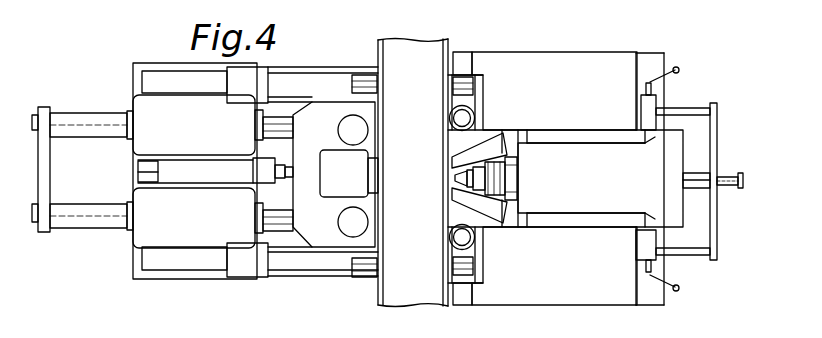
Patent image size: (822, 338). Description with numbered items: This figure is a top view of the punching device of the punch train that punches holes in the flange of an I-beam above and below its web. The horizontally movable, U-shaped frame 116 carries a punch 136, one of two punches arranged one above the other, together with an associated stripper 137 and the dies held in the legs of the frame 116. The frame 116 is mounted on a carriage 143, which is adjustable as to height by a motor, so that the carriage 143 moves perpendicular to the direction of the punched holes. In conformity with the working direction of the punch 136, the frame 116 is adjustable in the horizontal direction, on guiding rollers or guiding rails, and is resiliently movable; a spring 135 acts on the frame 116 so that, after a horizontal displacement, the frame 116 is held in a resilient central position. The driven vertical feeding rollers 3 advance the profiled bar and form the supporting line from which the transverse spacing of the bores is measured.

The feeding rollers 3 is at (441, 112).
The punch 136 is at (542, 91).
The frame 116 is at (603, 139).
The stripper 137 is at (529, 182).
The spring 135 is at (709, 181).
The carriage 143 is at (612, 52).